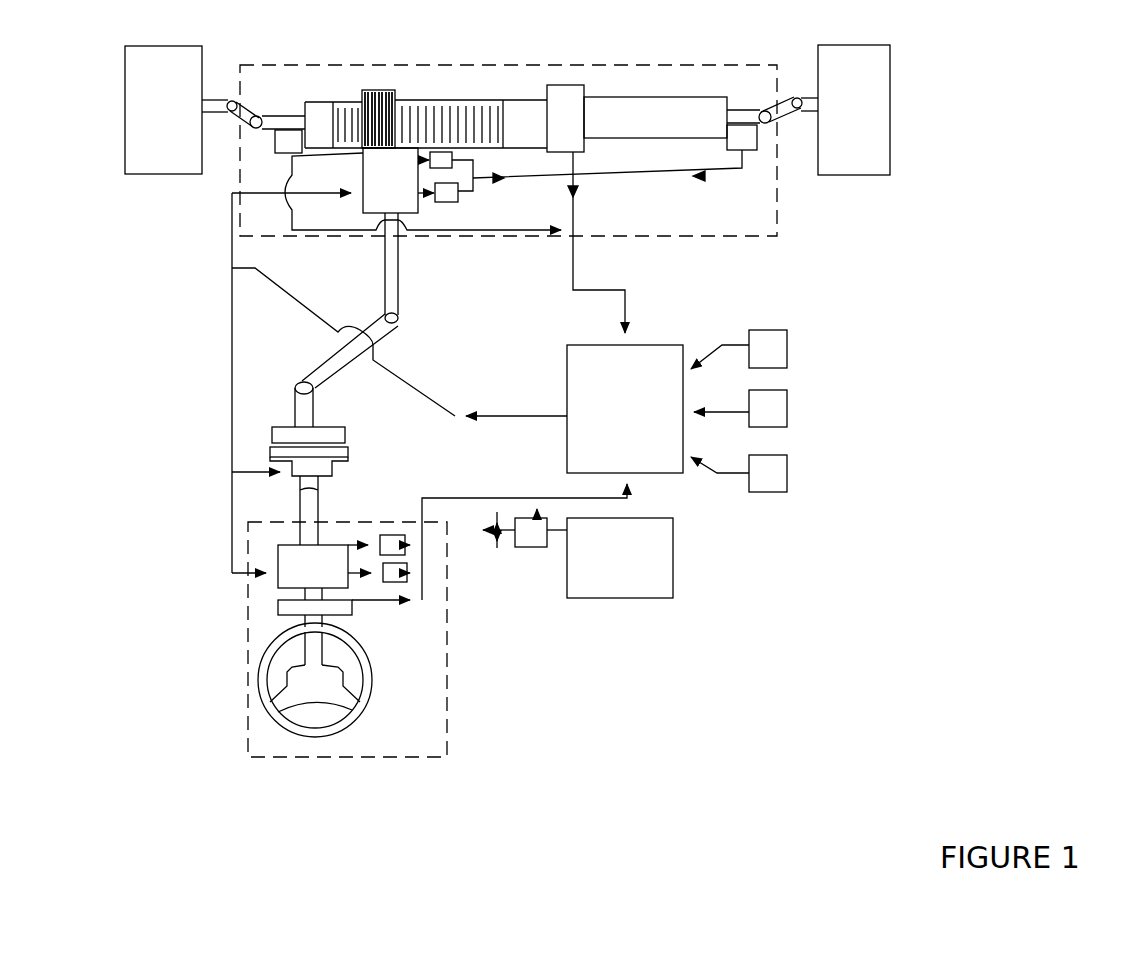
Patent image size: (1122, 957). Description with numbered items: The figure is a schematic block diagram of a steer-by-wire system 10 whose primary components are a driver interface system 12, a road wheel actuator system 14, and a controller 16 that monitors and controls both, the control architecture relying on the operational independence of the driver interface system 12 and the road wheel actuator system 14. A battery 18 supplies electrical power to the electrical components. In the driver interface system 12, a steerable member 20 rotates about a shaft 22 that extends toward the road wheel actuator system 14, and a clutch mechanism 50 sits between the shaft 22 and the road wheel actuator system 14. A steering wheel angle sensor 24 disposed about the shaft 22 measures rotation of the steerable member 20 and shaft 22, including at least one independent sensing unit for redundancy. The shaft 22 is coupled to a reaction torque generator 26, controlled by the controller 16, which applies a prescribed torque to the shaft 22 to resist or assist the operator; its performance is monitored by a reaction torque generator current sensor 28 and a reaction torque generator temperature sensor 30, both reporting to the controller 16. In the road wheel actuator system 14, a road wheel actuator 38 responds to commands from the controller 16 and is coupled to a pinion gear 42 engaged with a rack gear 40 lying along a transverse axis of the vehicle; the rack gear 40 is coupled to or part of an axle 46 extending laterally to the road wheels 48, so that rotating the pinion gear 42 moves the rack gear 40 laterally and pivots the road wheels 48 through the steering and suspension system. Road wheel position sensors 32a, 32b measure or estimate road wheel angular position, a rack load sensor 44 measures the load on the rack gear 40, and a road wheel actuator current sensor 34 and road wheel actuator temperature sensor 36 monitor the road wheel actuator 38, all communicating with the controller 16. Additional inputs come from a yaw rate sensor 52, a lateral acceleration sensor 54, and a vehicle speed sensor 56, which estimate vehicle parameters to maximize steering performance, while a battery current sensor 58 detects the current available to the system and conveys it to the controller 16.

The steer-by-wire system 10 is at (838, 654).
The driver interface system 12 is at (447, 740).
The road wheel actuator system 14 is at (777, 233).
The controller 16 is at (650, 345).
The battery 18 is at (673, 560).
The steerable member 20 is at (372, 702).
The shaft 22 is at (352, 620).
The steering wheel angle sensor 24 is at (278, 610).
The reaction torque generator 26 is at (278, 585).
The reaction torque generator current sensor 28 is at (407, 580).
The reaction torque generator temperature sensor 30 is at (392, 535).
The road wheel position sensor 32a is at (275, 150).
The road wheel position sensor 32b is at (752, 150).
The road wheel actuator current sensor 34 is at (452, 155).
The road wheel actuator temperature sensor 36 is at (458, 200).
The road wheel actuator 38 is at (420, 213).
The rack gear 40 is at (472, 100).
The pinion gear 42 is at (380, 90).
The rack load sensor 44 is at (575, 85).
The axle 46 is at (258, 102).
The road wheels 48 is at (125, 47).
The clutch mechanism 50 is at (350, 453).
The yaw rate sensor 52 is at (787, 350).
The lateral acceleration sensor 54 is at (787, 410).
The vehicle speed sensor 56 is at (787, 472).
The battery current sensor 58 is at (520, 547).